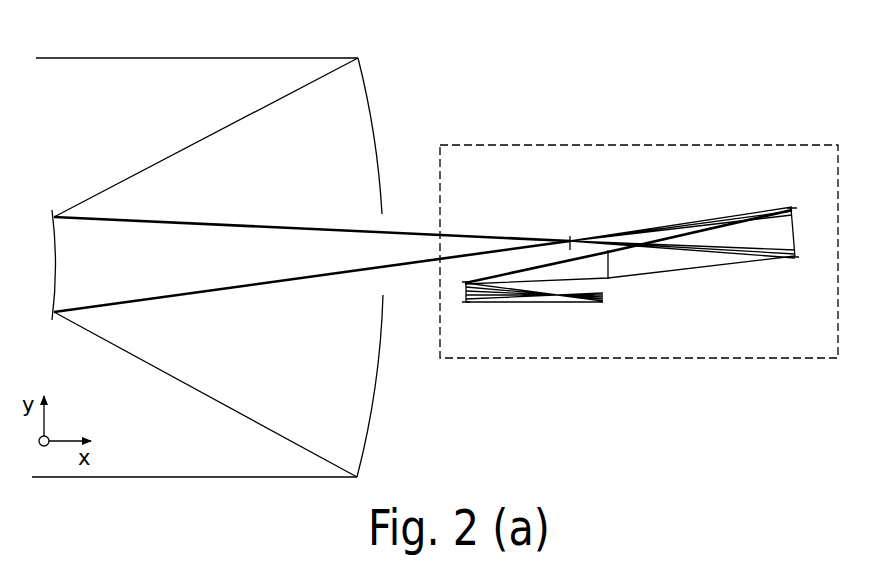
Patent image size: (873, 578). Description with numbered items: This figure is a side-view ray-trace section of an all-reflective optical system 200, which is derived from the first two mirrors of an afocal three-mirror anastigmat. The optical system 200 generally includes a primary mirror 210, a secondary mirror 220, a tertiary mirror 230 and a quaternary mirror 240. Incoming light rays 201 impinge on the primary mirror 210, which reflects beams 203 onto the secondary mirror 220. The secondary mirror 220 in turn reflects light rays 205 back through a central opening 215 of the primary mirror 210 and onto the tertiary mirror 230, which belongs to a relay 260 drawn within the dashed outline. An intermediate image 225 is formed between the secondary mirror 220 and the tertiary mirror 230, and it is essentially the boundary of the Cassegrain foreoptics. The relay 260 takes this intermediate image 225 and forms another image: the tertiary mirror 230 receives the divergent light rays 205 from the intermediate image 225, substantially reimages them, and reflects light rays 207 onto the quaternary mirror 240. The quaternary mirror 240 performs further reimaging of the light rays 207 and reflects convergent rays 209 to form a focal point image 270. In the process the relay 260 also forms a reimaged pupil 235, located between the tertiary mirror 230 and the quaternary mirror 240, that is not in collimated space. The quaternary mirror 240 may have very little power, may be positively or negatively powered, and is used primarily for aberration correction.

The all-reflective optical system 200 is at (512, 49).
The incoming light rays 201 is at (228, 58).
The beams 203 is at (178, 152).
The light rays 205 is at (328, 230).
The light rays 207 is at (742, 263).
The convergent rays 209 is at (523, 301).
The primary mirror 210 is at (378, 137).
The central opening 215 is at (390, 286).
The secondary mirror 220 is at (58, 258).
The intermediate image 225 is at (572, 236).
The tertiary mirror 230 is at (797, 212).
The reimaged pupil 235 is at (620, 266).
The quaternary mirror 240 is at (462, 291).
The relay 260 is at (716, 134).
The focal point image 270 is at (610, 298).